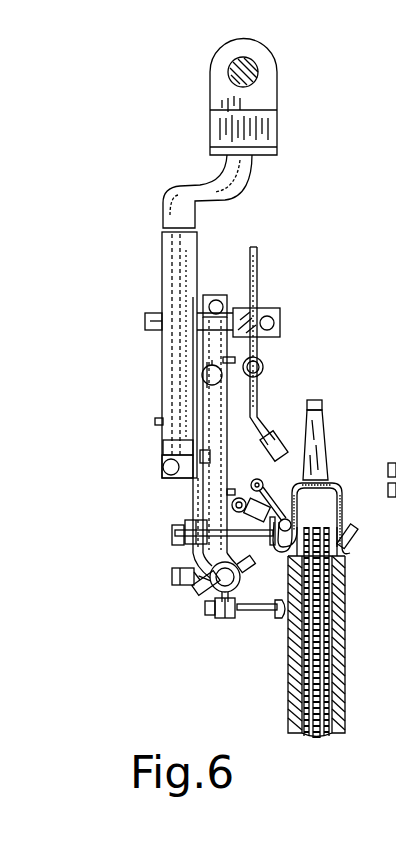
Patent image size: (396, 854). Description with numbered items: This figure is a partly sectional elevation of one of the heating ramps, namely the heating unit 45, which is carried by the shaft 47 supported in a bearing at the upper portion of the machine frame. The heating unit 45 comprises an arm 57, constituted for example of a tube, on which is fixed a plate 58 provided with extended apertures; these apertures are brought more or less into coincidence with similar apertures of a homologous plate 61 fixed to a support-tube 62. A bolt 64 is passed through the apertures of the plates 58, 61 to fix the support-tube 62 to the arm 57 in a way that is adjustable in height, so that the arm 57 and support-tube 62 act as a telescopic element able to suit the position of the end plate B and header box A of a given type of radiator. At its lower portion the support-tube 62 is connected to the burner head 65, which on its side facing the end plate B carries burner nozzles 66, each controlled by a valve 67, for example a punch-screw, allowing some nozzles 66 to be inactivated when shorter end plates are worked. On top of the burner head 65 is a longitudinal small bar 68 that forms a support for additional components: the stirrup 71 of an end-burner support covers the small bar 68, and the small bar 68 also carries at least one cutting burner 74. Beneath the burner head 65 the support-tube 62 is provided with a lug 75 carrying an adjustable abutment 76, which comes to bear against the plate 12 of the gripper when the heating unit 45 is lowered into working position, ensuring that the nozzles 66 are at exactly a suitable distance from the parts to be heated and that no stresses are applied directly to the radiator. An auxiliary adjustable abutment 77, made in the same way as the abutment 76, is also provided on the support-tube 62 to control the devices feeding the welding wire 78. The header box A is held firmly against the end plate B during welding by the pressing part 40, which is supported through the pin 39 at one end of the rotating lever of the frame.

The plate of the gripper 12 is at (295, 692).
The pin 39 is at (322, 406).
The pressing part 40 is at (323, 442).
The heating unit 45 is at (147, 470).
The shaft 47 is at (240, 73).
The arm 57 is at (170, 250).
The plate 58 is at (177, 290).
The homologous plate 61 is at (192, 417).
The support-tube 62 is at (213, 397).
The bolt 64 is at (182, 383).
The burner head 65 is at (233, 583).
The burner nozzle 66 is at (250, 565).
The valve 67 is at (193, 590).
The small bar 68 is at (207, 550).
The stirrup 71 is at (193, 513).
The cutting burner 74 is at (240, 497).
The lug 75 is at (222, 612).
The adjustable abutment 76 is at (250, 612).
The auxiliary adjustable abutment 77 is at (190, 543).
The welding wire 78 is at (273, 487).
The header box A is at (340, 487).
The end plate B is at (346, 552).